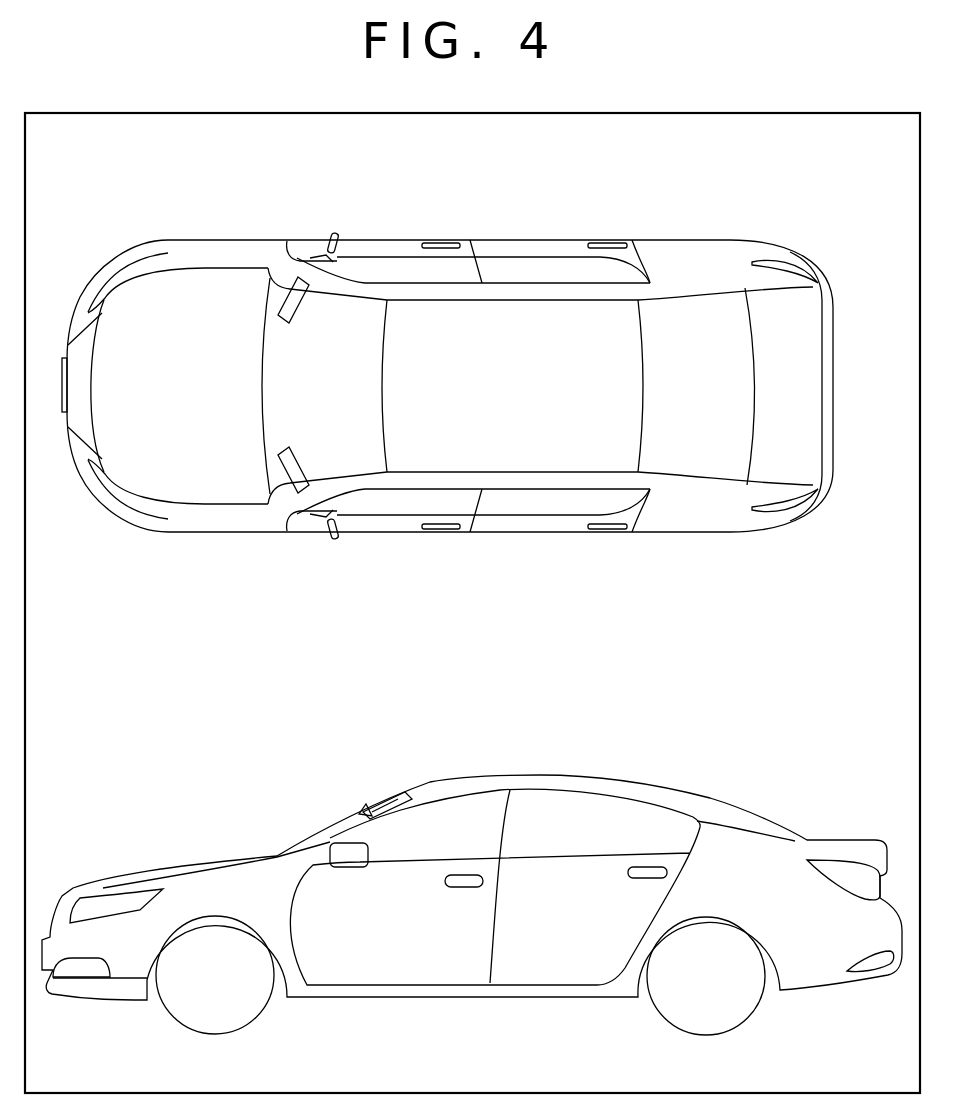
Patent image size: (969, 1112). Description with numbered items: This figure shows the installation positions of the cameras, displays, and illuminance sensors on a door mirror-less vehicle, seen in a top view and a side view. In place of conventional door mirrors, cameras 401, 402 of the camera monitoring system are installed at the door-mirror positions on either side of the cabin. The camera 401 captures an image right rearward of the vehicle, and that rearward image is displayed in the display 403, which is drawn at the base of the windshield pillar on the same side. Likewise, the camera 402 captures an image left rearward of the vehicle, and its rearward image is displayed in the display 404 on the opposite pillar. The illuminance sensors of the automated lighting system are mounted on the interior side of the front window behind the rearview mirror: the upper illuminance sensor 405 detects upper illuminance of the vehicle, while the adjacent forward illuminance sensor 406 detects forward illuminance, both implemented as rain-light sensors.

The camera 401 is at (336, 230).
The camera 402 is at (330, 542).
The display 403 is at (270, 275).
The display 404 is at (280, 470).
The upper illuminance sensor 405 is at (392, 793).
The forward illuminance sensor 406 is at (360, 808).